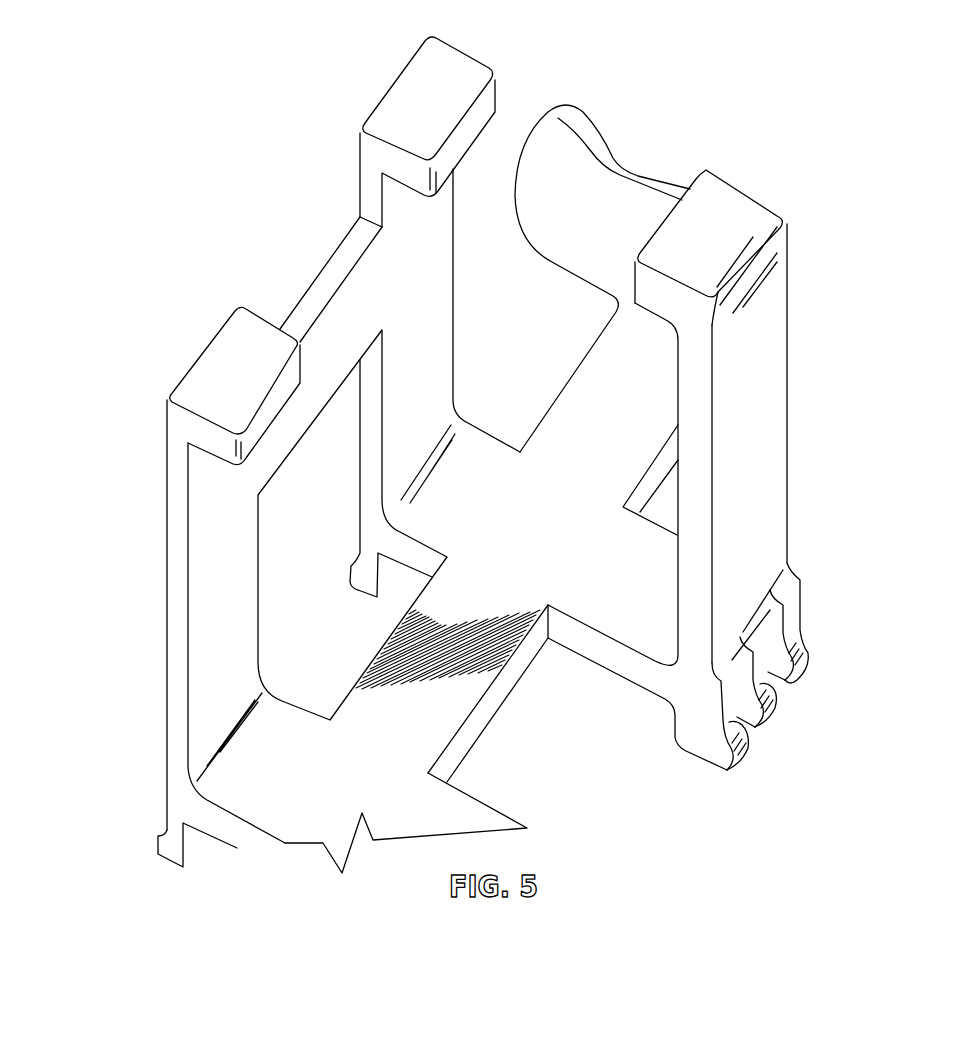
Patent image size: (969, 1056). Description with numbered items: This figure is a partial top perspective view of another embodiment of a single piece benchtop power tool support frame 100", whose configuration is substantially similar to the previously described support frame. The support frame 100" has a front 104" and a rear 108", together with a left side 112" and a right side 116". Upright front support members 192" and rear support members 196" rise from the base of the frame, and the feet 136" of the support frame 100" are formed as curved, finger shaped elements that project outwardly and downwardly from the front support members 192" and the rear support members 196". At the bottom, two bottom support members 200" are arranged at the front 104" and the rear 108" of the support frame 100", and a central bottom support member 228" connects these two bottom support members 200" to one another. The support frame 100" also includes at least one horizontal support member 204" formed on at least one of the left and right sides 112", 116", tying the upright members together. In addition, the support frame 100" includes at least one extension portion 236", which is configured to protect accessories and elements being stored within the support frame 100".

The support frame 100 is at (160, 170).
The front 104 is at (130, 766).
The rear 108 is at (600, 96).
The left side 112 is at (262, 208).
The right side 116 is at (805, 385).
The feet 136 is at (158, 852).
The front support members 192 is at (210, 632).
The rear support members 196 is at (427, 310).
The bottom support members 200 is at (303, 726).
The horizontal support member 204 is at (335, 320).
The central bottom support member 228 is at (470, 688).
The extension portion 236 is at (612, 197).